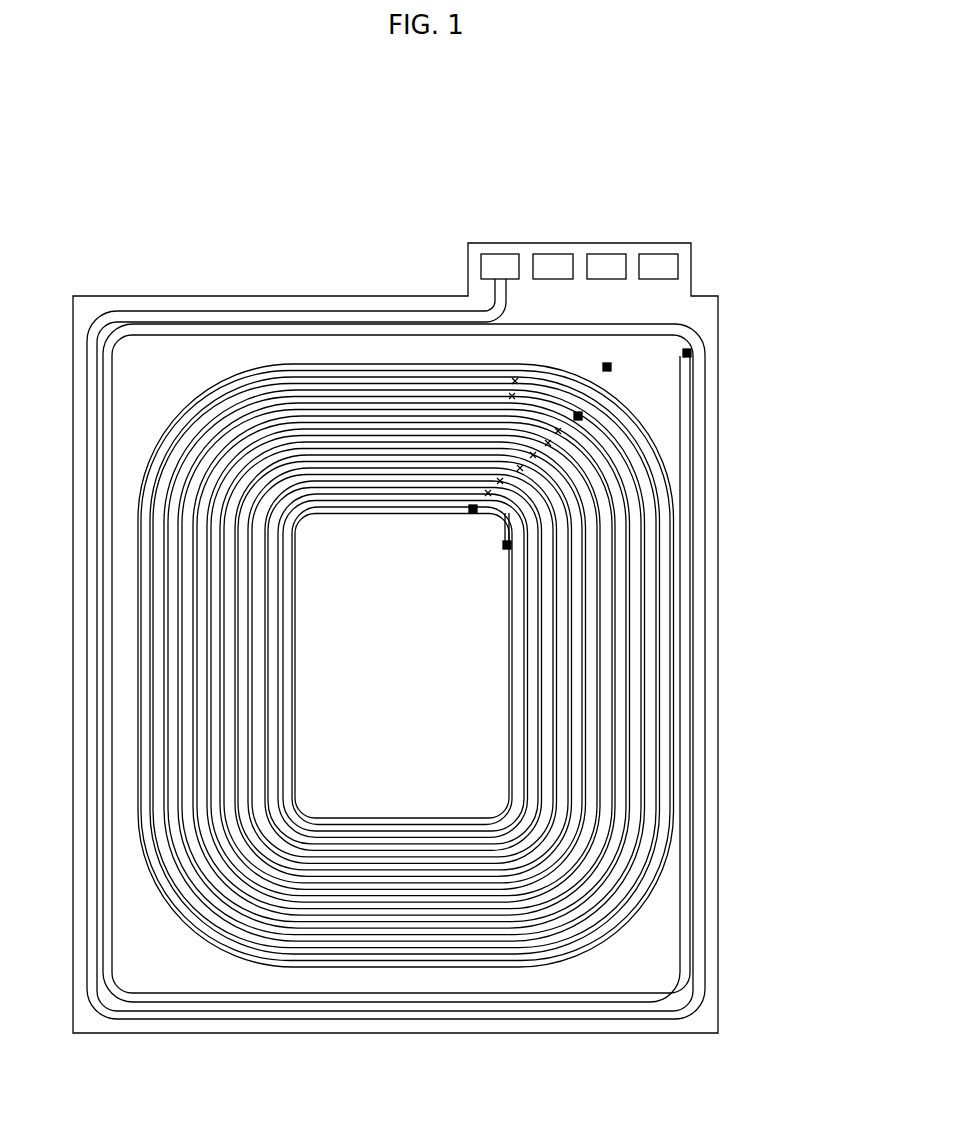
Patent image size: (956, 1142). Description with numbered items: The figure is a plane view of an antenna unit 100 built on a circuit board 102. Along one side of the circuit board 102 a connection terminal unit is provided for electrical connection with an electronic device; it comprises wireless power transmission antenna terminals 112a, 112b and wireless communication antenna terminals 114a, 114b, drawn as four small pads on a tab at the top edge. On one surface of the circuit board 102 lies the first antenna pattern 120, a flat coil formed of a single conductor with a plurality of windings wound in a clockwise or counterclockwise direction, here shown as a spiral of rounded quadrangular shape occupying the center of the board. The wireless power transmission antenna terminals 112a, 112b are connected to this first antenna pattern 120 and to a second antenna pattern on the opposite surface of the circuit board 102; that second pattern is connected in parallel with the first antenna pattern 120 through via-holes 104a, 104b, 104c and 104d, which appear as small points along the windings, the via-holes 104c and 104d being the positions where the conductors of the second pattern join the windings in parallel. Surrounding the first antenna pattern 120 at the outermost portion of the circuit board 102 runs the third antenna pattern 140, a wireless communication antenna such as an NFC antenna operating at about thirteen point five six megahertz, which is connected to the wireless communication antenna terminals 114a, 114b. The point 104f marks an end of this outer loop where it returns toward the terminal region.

The antenna unit 100 is at (624, 160).
The circuit board 102 is at (268, 296).
The wireless power transmission antenna terminal 112a is at (549, 253).
The wireless power transmission antenna terminal 112b is at (606, 253).
The wireless communication antenna terminal 114a is at (497, 253).
The wireless communication antenna terminal 114b is at (660, 253).
The first antenna pattern 120 is at (655, 565).
The third antenna pattern 140 is at (372, 312).
The via-hole 104a is at (611, 368).
The via-hole 104b is at (504, 548).
The via-hole 104c is at (470, 510).
The via-hole 104d is at (582, 417).
The coil end 104f is at (692, 353).